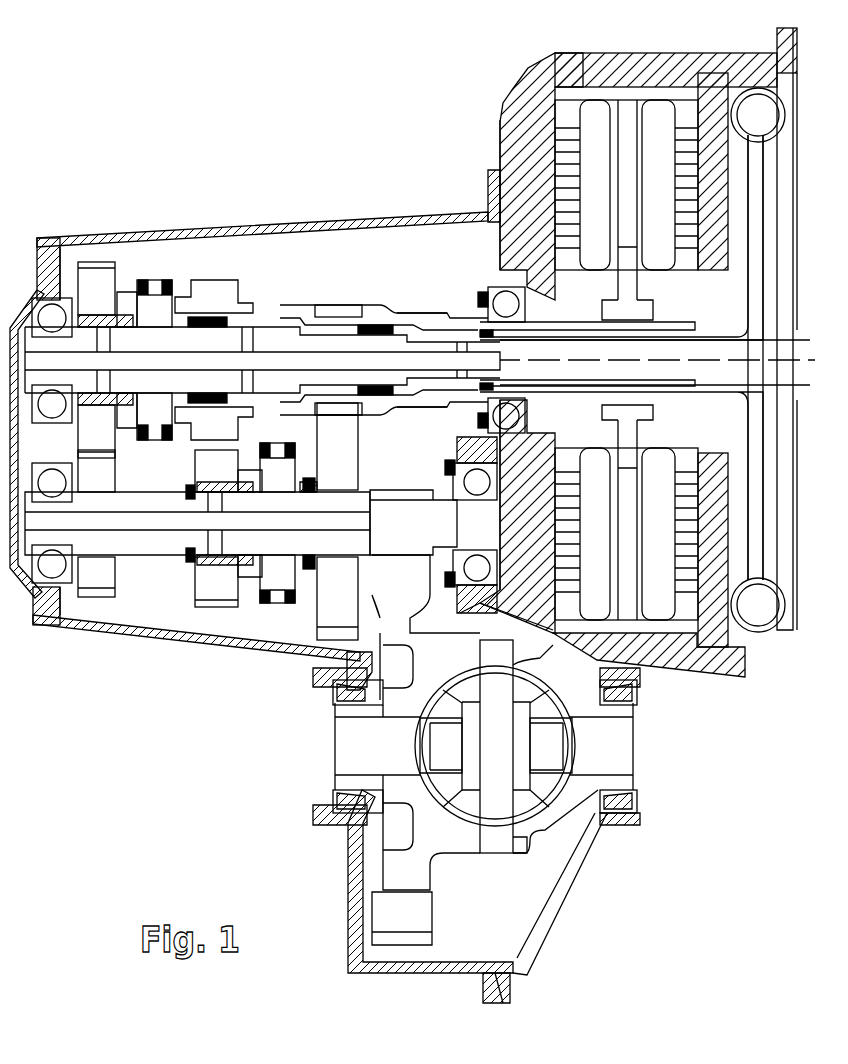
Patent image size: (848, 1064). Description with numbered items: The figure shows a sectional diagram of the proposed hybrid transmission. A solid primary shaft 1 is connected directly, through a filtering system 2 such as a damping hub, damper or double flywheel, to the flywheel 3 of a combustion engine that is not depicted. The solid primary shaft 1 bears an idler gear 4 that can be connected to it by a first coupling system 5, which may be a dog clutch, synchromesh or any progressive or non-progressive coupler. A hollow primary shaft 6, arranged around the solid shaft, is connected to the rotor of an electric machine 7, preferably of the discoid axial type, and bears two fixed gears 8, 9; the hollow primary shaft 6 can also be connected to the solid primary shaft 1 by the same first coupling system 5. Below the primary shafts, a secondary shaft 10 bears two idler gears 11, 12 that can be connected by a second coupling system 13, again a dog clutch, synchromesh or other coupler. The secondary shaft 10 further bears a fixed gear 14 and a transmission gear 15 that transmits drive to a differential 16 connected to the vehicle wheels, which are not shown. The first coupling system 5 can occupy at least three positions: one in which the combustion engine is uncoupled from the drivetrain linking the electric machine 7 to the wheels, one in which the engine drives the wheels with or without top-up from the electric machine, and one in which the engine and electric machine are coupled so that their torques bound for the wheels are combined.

The solid primary shaft 1 is at (710, 372).
The filtering system 2 is at (753, 213).
The flywheel 3 is at (781, 193).
The idler gear 4 is at (92, 268).
The first coupling system 5 is at (142, 282).
The hollow primary shaft 6 is at (427, 320).
The electric machine 7 is at (627, 290).
The fixed gear 8 is at (340, 308).
The fixed gear 9 is at (220, 282).
The secondary shaft 10 is at (165, 545).
The idler gear 11 is at (208, 603).
The idler gear 12 is at (325, 610).
The second coupling system 13 is at (282, 596).
The fixed gear 14 is at (100, 577).
The transmission gear 15 is at (390, 523).
The differential 16 is at (405, 575).